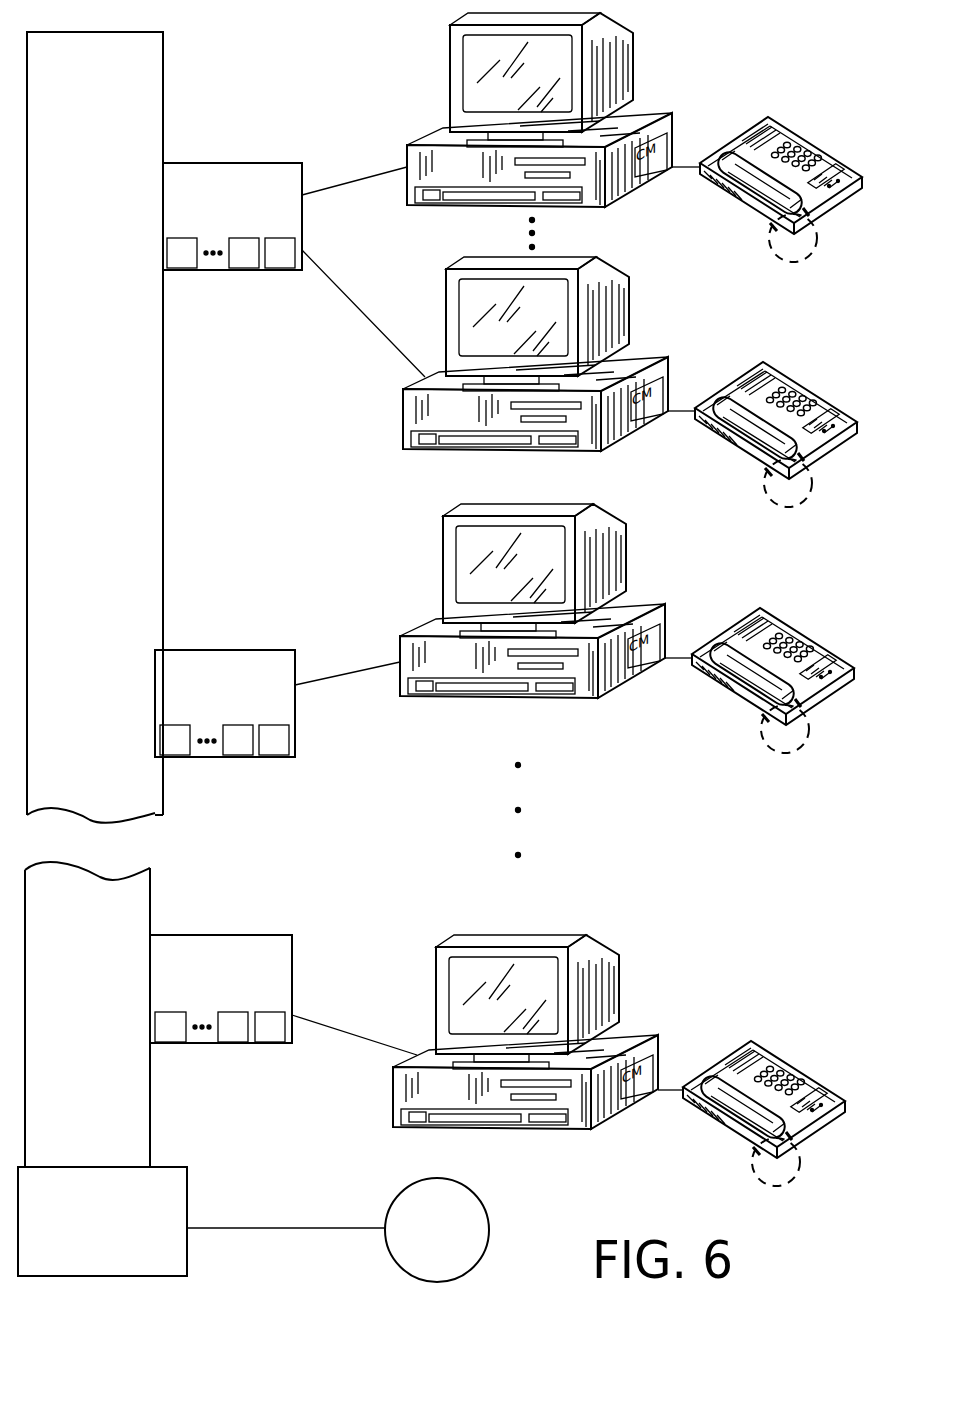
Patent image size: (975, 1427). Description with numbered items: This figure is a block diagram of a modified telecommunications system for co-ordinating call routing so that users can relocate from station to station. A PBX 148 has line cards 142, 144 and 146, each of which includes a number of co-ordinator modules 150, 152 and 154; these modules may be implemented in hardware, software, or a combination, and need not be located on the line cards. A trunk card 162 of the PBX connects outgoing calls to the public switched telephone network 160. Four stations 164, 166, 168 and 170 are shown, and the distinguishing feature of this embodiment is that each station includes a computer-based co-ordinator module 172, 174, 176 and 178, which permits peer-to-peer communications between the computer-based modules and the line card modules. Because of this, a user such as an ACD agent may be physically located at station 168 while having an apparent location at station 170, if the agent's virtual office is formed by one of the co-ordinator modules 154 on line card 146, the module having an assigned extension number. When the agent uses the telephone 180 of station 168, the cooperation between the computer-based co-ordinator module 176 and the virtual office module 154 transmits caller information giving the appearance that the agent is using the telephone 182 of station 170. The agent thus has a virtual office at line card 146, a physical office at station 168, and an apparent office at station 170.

The PBX 148 is at (163, 78).
The line card 142 is at (280, 170).
The line card 144 is at (272, 658).
The line card 146 is at (268, 942).
The co-ordinator modules 150 is at (267, 270).
The co-ordinator modules 152 is at (261, 757).
The co-ordinator modules 154 is at (257, 1044).
The public switched telephone network 160 is at (397, 1193).
The trunk card 162 is at (188, 1182).
The station 164 is at (737, 61).
The station 166 is at (739, 324).
The station 168 is at (737, 574).
The station 170 is at (726, 997).
The computer-based co-ordinator module 172 is at (668, 136).
The computer-based co-ordinator module 174 is at (664, 381).
The computer-based co-ordinator module 176 is at (660, 626).
The computer-based co-ordinator module 178 is at (653, 1058).
The telephone 180 is at (732, 688).
The telephone 182 is at (725, 1123).